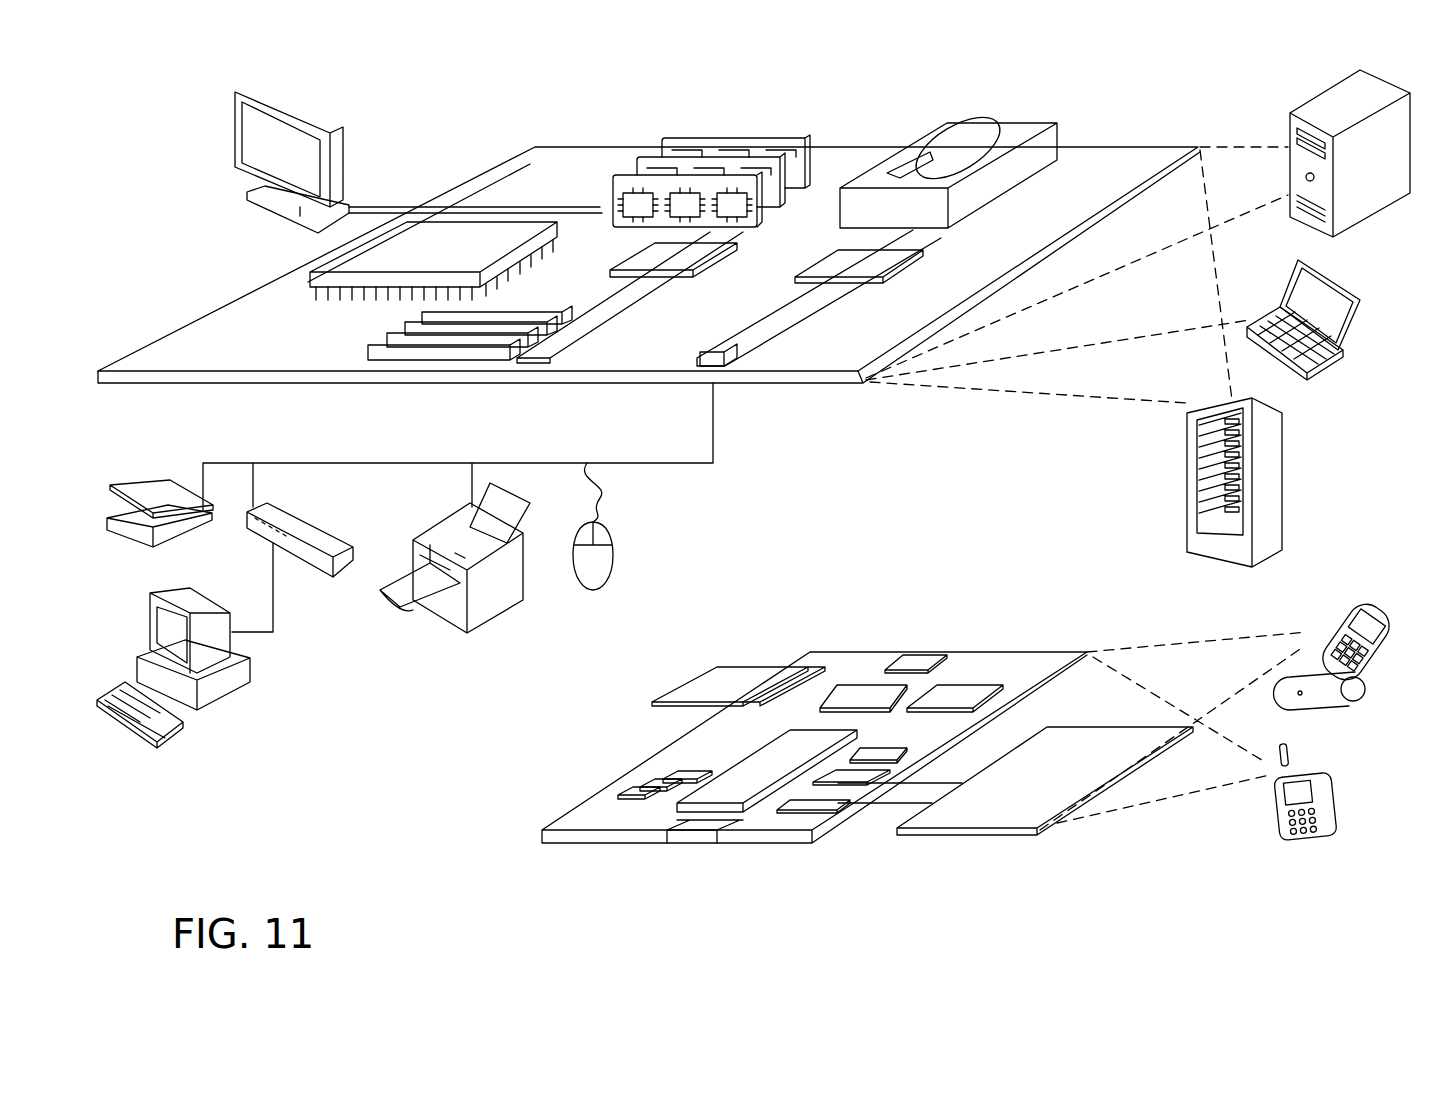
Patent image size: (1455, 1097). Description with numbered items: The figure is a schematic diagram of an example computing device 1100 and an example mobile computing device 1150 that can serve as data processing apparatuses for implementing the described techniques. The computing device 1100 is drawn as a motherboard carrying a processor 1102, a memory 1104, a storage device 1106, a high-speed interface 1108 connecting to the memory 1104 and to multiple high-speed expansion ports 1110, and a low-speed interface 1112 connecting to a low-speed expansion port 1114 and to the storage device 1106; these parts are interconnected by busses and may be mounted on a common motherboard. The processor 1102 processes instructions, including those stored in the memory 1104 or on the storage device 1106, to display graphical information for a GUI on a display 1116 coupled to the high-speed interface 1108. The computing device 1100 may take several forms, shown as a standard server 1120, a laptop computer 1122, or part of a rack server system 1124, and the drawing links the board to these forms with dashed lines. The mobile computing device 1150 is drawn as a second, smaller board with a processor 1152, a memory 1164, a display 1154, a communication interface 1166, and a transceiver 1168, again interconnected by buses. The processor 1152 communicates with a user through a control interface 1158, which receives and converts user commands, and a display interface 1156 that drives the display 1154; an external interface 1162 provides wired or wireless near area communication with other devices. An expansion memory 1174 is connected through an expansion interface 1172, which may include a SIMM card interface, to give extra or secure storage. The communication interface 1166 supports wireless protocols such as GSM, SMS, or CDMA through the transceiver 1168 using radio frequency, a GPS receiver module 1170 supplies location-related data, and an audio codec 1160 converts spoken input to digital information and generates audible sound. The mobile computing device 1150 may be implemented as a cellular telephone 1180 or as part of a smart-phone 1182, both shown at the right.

The computing device 1100 is at (458, 117).
The processor 1102 is at (318, 278).
The memory 1104 is at (683, 137).
The storage device 1106 is at (930, 118).
The high-speed interface 1108 is at (647, 246).
The high-speed expansion ports 1110 is at (395, 340).
The low-speed interface 1112 is at (837, 260).
The low-speed expansion port 1114 is at (730, 373).
The display 1116 is at (238, 92).
The standard server 1120 is at (1288, 131).
The laptop computer 1122 is at (1360, 293).
The rack server system 1124 is at (1187, 510).
The mobile computing device 1150 is at (516, 841).
The processor 1152 is at (737, 797).
The display 1154 is at (998, 817).
The display interface 1156 is at (810, 833).
The control interface 1158 is at (855, 776).
The audio codec 1160 is at (877, 758).
The external interface 1162 is at (700, 833).
The memory 1164 is at (643, 788).
The communication interface 1166 is at (870, 693).
The transceiver 1168 is at (953, 693).
The GPS receiver module 1170 is at (927, 660).
The expansion interface 1172 is at (793, 667).
The expansion memory 1174 is at (707, 670).
The cellular telephone 1180 is at (1337, 574).
The smart-phone 1182 is at (1270, 803).